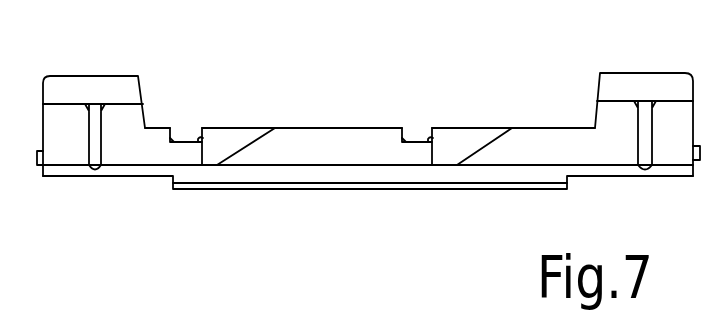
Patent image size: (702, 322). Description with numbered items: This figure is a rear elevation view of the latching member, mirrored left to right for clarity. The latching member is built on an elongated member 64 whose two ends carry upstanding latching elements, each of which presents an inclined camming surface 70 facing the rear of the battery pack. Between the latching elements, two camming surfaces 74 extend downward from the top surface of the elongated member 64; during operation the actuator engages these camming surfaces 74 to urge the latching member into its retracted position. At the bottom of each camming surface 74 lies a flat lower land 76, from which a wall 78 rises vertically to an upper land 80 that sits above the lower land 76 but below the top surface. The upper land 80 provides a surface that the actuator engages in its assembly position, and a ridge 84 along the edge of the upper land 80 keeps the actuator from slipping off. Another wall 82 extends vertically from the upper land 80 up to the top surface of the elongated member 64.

The elongated member 64 is at (318, 148).
The inclined camming surface 70 is at (61, 88).
The camming surface 74 is at (240, 150).
The flat land 76 is at (217, 165).
The wall 78 is at (198, 157).
The upper land 80 is at (183, 140).
The wall 82 is at (170, 138).
The ridge 84 is at (201, 128).